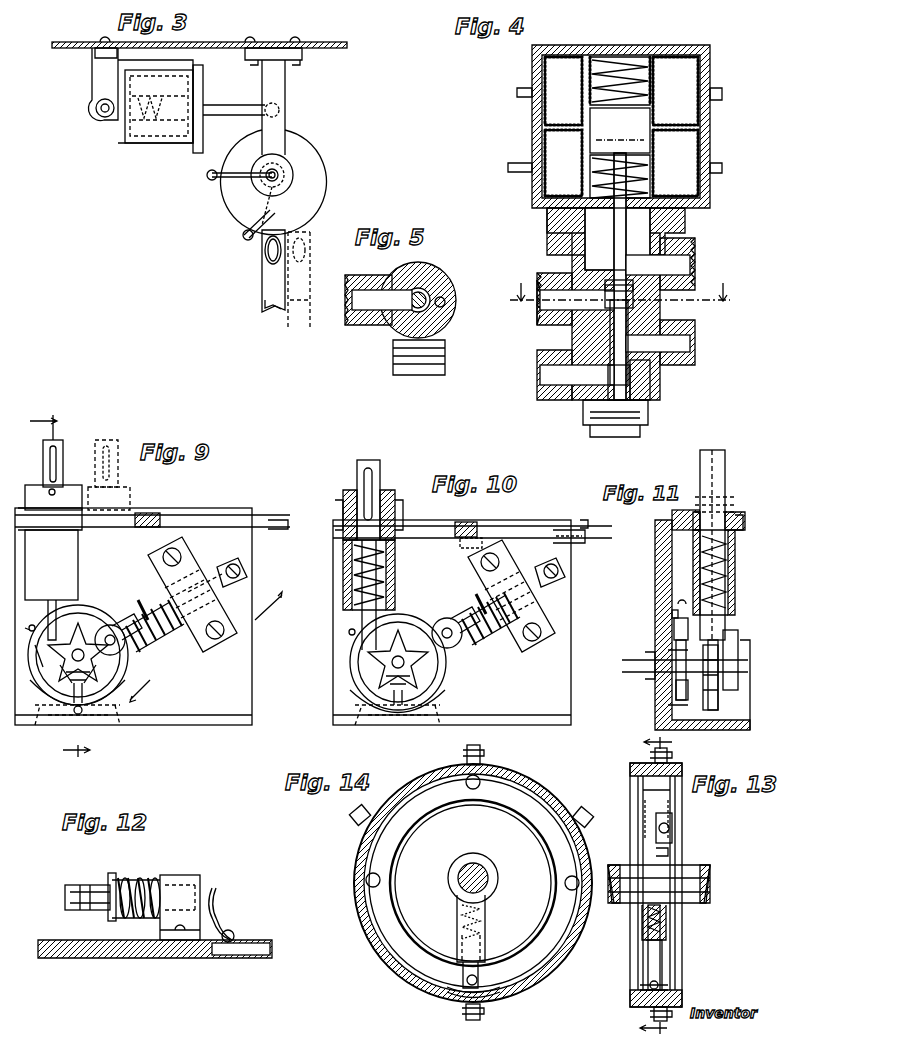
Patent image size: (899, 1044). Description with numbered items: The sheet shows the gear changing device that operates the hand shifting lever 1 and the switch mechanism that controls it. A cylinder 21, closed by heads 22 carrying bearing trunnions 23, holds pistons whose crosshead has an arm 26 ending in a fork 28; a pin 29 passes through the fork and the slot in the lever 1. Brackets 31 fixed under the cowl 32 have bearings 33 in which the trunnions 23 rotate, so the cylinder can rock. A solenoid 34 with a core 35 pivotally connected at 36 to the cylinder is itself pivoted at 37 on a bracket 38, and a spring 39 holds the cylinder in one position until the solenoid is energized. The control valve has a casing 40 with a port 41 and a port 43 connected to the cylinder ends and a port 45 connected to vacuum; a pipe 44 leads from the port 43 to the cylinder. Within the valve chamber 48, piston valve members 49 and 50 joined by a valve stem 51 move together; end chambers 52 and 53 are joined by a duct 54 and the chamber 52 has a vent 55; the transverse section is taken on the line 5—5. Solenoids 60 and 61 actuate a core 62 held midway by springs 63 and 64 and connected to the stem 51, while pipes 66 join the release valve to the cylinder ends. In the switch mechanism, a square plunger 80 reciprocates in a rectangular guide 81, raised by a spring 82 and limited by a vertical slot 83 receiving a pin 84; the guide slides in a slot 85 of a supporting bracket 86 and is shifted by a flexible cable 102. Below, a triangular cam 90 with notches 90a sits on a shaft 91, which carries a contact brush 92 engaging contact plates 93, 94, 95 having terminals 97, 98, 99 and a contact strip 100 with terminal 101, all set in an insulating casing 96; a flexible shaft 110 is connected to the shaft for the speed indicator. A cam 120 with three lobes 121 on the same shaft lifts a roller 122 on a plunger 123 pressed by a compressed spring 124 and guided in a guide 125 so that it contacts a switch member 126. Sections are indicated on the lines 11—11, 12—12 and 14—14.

In FIG. 3, the hand shifting lever 1 is at (262, 290).
In FIG. 4, the section line 5— 5 is at (617, 302).
In FIG. 9, the section line 11— 11 is at (70, 589).
In FIG. 9, the section line 12— 12 is at (214, 648).
In FIG. 13, the section line 14— 14 is at (667, 887).
In FIG. 3, the cylinder 21 is at (310, 148).
In FIG. 3, the heads 22 is at (310, 186).
In FIG. 3, the bearing trunnions 23 is at (290, 161).
In FIG. 3, the arm 26 is at (296, 232).
In FIG. 3, the fork 28 is at (262, 268).
In FIG. 3, the pin 29 is at (265, 252).
In FIG. 3, the brackets 31 is at (285, 84).
In FIG. 3, the cowl 32 is at (92, 42).
In FIG. 3, the bearings 33 is at (262, 190).
In FIG. 3, the solenoid 34 is at (150, 145).
In FIG. 3, the armature or core 35 is at (205, 96).
In FIG. 3, the pivotal connection 36 is at (279, 110).
In FIG. 3, the pivot 37 is at (103, 118).
In FIG. 3, the bracket 38 is at (92, 82).
In FIG. 3, the spring 39 is at (138, 120).
In FIG. 4, the valve casing 40 is at (585, 258).
In FIG. 5, the valve casing 40 is at (418, 270).
In FIG. 4, the port 41 is at (540, 285).
In FIG. 5, the port 41 is at (372, 302).
In FIG. 4, the port 43 is at (562, 375).
In FIG. 3, the pipe 44 is at (244, 230).
In FIG. 4, the port 45 is at (682, 358).
In FIG. 5, the port 45 is at (395, 358).
In FIG. 4, the valve chamber 48 is at (612, 328).
In FIG. 4, the piston valve member 49 is at (614, 282).
In FIG. 4, the piston valve member 50 is at (650, 370).
In FIG. 4, the valve stem 51 is at (614, 238).
In FIG. 4, the chamber 52 is at (590, 218).
In FIG. 4, the chamber 53 is at (598, 408).
In FIG. 4, the duct 54 is at (640, 382).
In FIG. 5, the duct 54 is at (443, 306).
In FIG. 4, the vent 55 is at (692, 264).
In FIG. 4, the solenoid 60 is at (548, 66).
In FIG. 4, the solenoid 61 is at (548, 138).
In FIG. 4, the solenoid core 62 is at (640, 120).
In FIG. 4, the spring 63 is at (650, 94).
In FIG. 4, the spring 64 is at (648, 172).
In FIG. 3, the pipes 66 is at (225, 178).
In FIG. 9, the square plunger 80 is at (43, 448).
In FIG. 10, the square plunger 80 is at (357, 476).
In FIG. 11, the square plunger 80 is at (725, 474).
In FIG. 9, the rectangular guide 81 is at (78, 556).
In FIG. 10, the rectangular guide 81 is at (395, 596).
In FIG. 11, the rectangular guide 81 is at (735, 558).
In FIG. 10, the spring 82 is at (395, 577).
In FIG. 11, the spring 82 is at (735, 578).
In FIG. 9, the vertical slot 83 is at (50, 468).
In FIG. 10, the vertical slot 83 is at (378, 484).
In FIG. 11, the vertical slot 83 is at (705, 462).
In FIG. 9, the pin 84 is at (55, 492).
In FIG. 10, the pin 84 is at (365, 498).
In FIG. 11, the pin 84 is at (735, 505).
In FIG. 9, the slot 85 is at (140, 518).
In FIG. 10, the slot 85 is at (432, 522).
In FIG. 11, the slot 85 is at (676, 522).
In FIG. 9, the supporting bracket 86 is at (252, 562).
In FIG. 10, the supporting bracket 86 is at (335, 664).
In FIG. 11, the supporting bracket 86 is at (663, 570).
In FIG. 12, the supporting bracket 86 is at (78, 958).
In FIG. 9, the cam 90 is at (52, 672).
In FIG. 10, the cam 90 is at (370, 690).
In FIG. 11, the cam 90 is at (718, 700).
In FIG. 9, the notches 90a is at (78, 712).
In FIG. 10, the notches 90a is at (420, 688).
In FIG. 11, the shaft 91 is at (700, 660).
In FIG. 14, the shaft 91 is at (478, 868).
In FIG. 13, the shaft 91 is at (700, 875).
In FIG. 11, the electrical contact brush 92 is at (676, 694).
In FIG. 14, the electrical contact brush 92 is at (462, 968).
In FIG. 13, the electrical contact brush 92 is at (662, 960).
In FIG. 14, the contact plate 93 is at (455, 998).
In FIG. 13, the contact plate 93 is at (672, 992).
In FIG. 14, the contact plate 94 is at (570, 815).
In FIG. 13, the contact plate 94 is at (672, 830).
In FIG. 14, the contact plate 95 is at (362, 835).
In FIG. 11, the insulating casing 96 is at (672, 624).
In FIG. 14, the insulating casing 96 is at (370, 940).
In FIG. 13, the insulating casing 96 is at (632, 996).
In FIG. 14, the terminal 97 is at (472, 1024).
In FIG. 14, the terminal 98 is at (593, 810).
In FIG. 14, the terminal 99 is at (350, 816).
In FIG. 13, the terminal 99 is at (650, 1016).
In FIG. 14, the contact strip 100 is at (370, 895).
In FIG. 13, the contact strip 100 is at (640, 826).
In FIG. 14, the terminal 101 is at (482, 762).
In FIG. 13, the terminal 101 is at (652, 757).
In FIG. 9, the flexible cable 102 is at (215, 508).
In FIG. 10, the flexible cable 102 is at (580, 542).
In FIG. 11, the flexible shaft 110 is at (630, 660).
In FIG. 9, the cam 120 is at (60, 705).
In FIG. 10, the cam 120 is at (370, 705).
In FIG. 11, the cam 120 is at (738, 642).
In FIG. 9, the lobes 121 is at (98, 660).
In FIG. 10, the lobes 121 is at (420, 668).
In FIG. 9, the roller 122 is at (125, 650).
In FIG. 10, the roller 122 is at (462, 645).
In FIG. 12, the roller 122 is at (70, 896).
In FIG. 9, the plunger 123 is at (180, 632).
In FIG. 10, the plunger 123 is at (535, 595).
In FIG. 12, the plunger 123 is at (143, 878).
In FIG. 9, the compressed spring 124 is at (140, 600).
In FIG. 10, the compressed spring 124 is at (478, 595).
In FIG. 12, the compressed spring 124 is at (122, 878).
In FIG. 9, the guide 125 is at (185, 580).
In FIG. 10, the guide 125 is at (505, 585).
In FIG. 12, the guide 125 is at (185, 878).
In FIG. 9, the switch member 126 is at (245, 575).
In FIG. 10, the switch member 126 is at (545, 570).
In FIG. 12, the switch member 126 is at (220, 904).